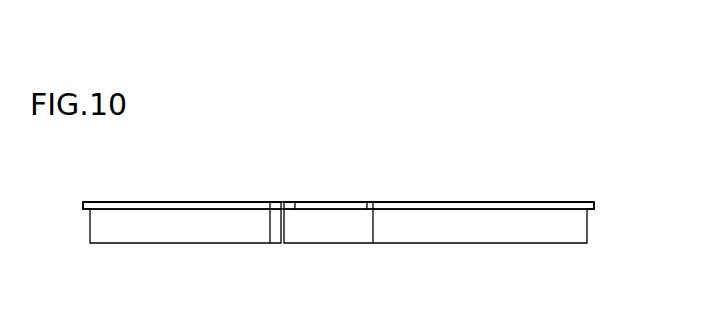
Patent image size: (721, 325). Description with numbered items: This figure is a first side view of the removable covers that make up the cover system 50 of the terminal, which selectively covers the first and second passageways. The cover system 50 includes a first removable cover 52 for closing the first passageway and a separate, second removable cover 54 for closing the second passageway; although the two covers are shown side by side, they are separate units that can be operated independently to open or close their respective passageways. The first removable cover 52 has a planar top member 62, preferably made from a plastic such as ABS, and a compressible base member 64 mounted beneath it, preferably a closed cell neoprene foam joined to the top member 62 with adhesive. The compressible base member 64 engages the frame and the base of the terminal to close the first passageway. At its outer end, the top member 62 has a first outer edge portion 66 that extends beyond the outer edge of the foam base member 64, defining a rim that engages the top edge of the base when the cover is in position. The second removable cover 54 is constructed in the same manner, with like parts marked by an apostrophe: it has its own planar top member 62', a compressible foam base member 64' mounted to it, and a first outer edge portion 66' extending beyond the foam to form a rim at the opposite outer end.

The cover system 50 is at (418, 93).
The first removable cover 52 is at (256, 203).
The second removable cover 54 is at (536, 203).
The top member 62 is at (182, 170).
The top member 62' is at (439, 170).
The compressible base member 64 is at (185, 257).
The compressible base member 64' is at (439, 257).
The first outer edge portion 66 is at (53, 217).
The first outer edge portion 66' is at (636, 227).